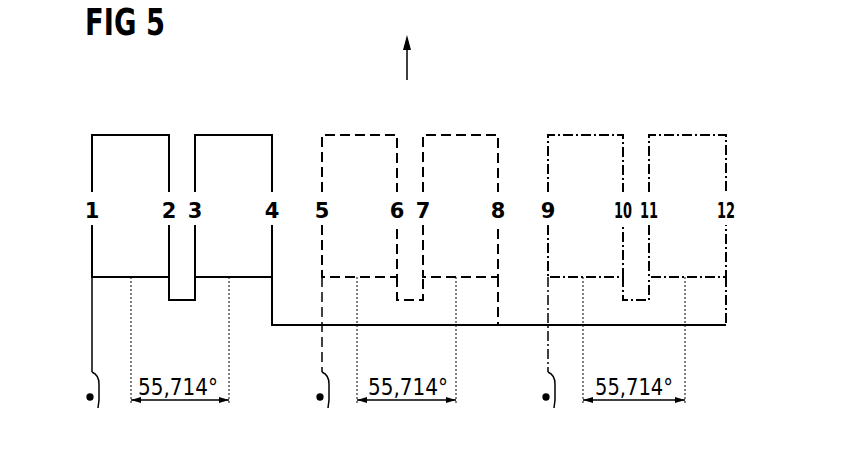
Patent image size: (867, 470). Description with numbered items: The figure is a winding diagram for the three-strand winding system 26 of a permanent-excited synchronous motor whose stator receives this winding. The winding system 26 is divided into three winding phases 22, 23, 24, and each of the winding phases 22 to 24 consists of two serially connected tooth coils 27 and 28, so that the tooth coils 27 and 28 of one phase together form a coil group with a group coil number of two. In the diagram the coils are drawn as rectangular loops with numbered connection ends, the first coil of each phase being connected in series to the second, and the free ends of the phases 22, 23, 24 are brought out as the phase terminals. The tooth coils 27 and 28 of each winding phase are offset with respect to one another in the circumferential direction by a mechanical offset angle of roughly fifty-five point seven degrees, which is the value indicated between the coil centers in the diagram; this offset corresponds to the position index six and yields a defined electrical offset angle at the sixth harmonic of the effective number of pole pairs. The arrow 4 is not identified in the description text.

The direction of rotation arrow 4 is at (407, 58).
The winding phase 22 is at (97, 357).
The winding phase 23 is at (329, 357).
The winding phase 24 is at (554, 357).
The winding system 26 is at (753, 126).
The tooth coil 27 is at (126, 147).
The tooth coil 28 is at (230, 147).